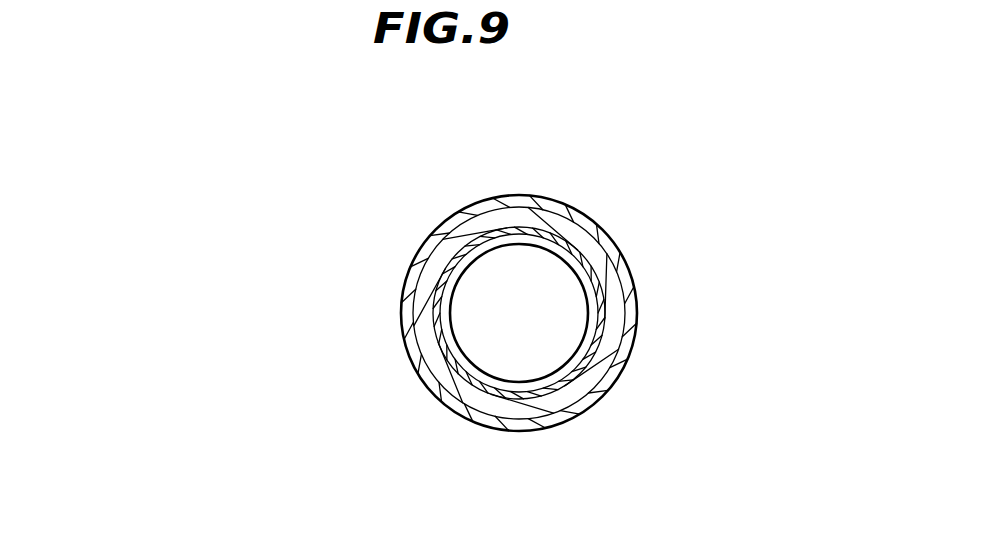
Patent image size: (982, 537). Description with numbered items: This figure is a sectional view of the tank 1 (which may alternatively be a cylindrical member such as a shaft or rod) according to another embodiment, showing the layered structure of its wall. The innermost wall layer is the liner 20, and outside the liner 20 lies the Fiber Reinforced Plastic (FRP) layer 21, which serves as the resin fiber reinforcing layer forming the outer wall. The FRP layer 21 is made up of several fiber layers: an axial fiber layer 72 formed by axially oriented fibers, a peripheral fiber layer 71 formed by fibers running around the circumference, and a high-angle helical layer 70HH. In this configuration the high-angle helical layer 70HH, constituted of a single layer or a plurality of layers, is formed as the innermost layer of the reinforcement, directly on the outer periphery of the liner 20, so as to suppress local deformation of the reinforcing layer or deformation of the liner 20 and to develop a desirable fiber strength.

The tank 1 is at (677, 298).
The liner 20 is at (479, 256).
The Fiber Reinforced Plastic (FRP) layer 21 is at (141, 230).
The axial fiber layer 72 is at (420, 265).
The peripheral fiber layer 71 is at (431, 338).
The high-angle helical layer 70HH is at (467, 373).